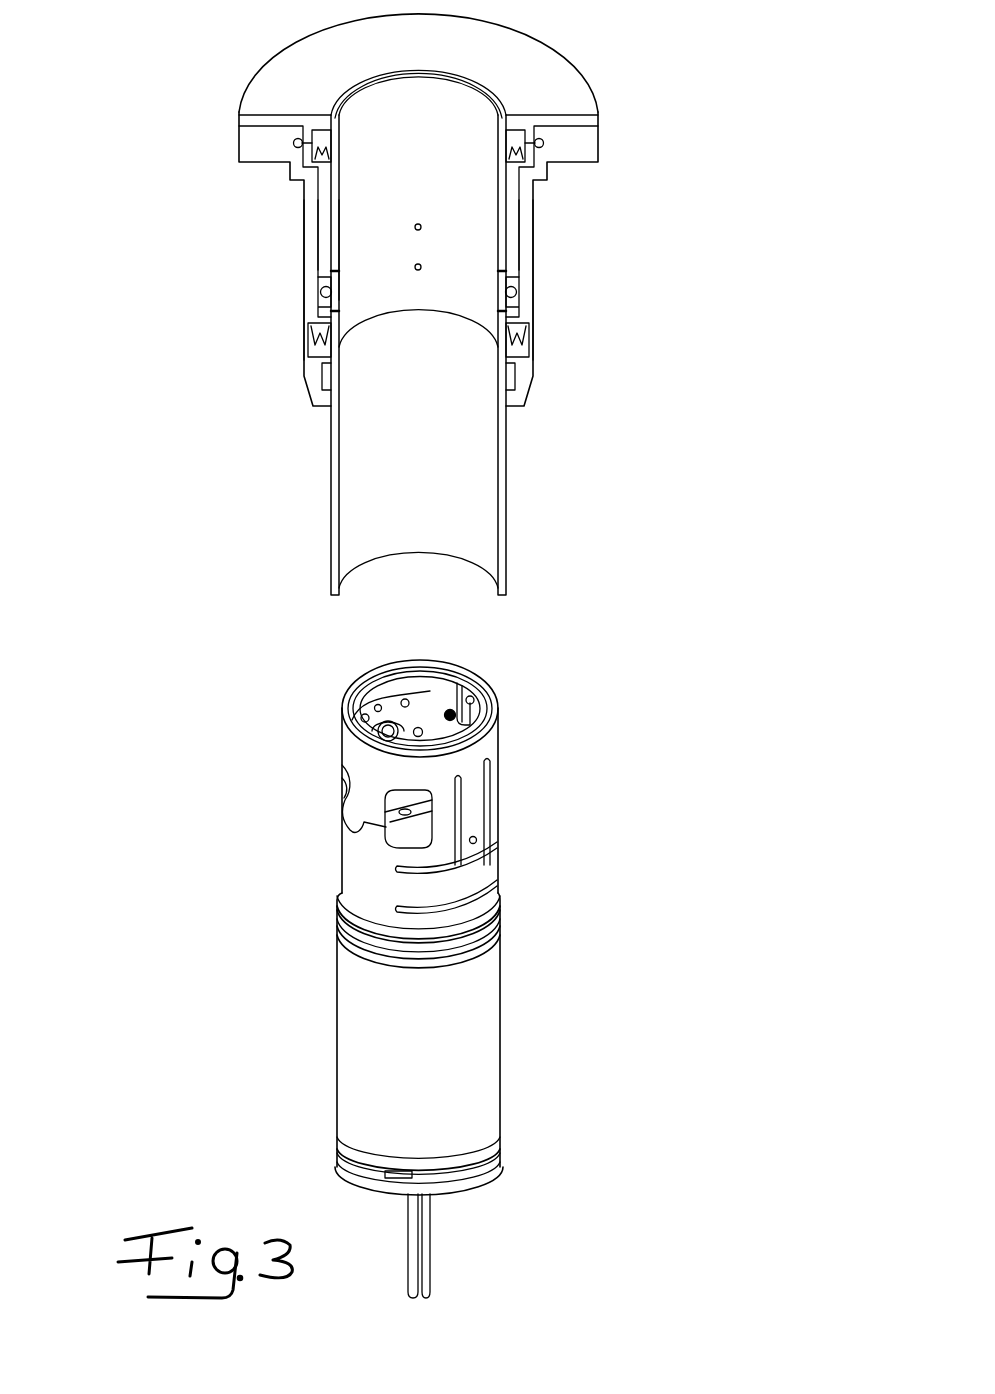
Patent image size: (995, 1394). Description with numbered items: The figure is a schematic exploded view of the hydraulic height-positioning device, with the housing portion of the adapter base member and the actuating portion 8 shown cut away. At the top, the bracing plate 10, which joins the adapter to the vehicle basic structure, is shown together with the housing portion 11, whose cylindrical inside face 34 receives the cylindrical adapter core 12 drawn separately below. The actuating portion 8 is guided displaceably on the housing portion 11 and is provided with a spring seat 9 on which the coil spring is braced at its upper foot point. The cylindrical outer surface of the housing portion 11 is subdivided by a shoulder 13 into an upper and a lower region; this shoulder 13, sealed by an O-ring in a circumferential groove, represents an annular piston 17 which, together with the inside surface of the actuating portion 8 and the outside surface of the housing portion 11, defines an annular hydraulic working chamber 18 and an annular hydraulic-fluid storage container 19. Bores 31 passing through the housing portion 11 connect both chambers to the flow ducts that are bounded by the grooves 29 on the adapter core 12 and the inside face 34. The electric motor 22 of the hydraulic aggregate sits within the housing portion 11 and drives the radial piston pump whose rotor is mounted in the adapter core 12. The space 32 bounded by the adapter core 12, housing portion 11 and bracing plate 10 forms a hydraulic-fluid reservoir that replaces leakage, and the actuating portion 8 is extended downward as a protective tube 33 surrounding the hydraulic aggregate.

The actuating portion 8 is at (225, 237).
The spring seat 9 is at (593, 183).
The bracing plate 10 is at (566, 92).
The housing portion 11 is at (340, 225).
The adapter core 12 is at (545, 743).
The shoulder 13 is at (520, 281).
The annular piston 17 is at (552, 323).
The annular hydraulic working chamber 18 is at (307, 313).
The annular hydraulic-fluid storage container 19 is at (322, 227).
The electric motor 22 is at (483, 1097).
The grooves 29 is at (473, 890).
The bores 31 is at (425, 226).
The space 32 is at (393, 705).
The protective tube 33 is at (503, 520).
The inside face 34 is at (386, 141).